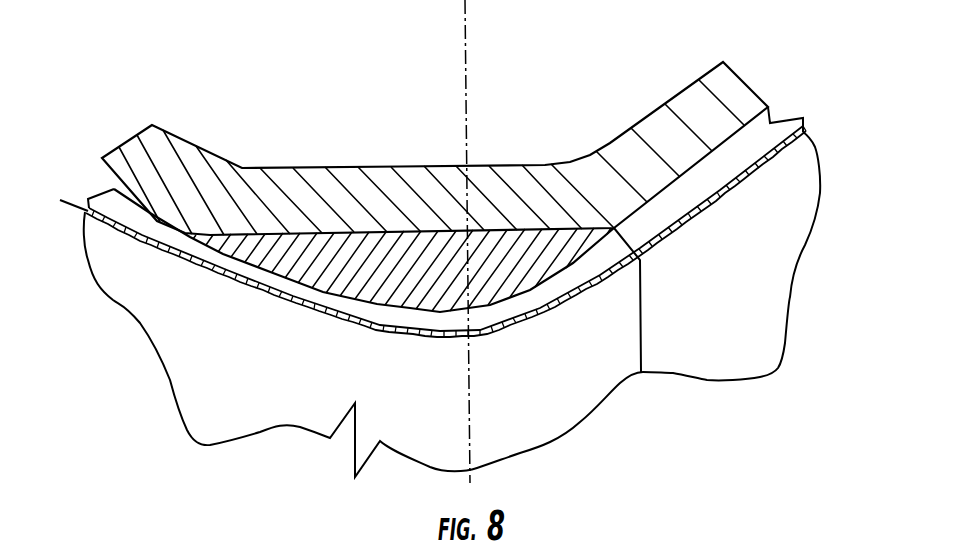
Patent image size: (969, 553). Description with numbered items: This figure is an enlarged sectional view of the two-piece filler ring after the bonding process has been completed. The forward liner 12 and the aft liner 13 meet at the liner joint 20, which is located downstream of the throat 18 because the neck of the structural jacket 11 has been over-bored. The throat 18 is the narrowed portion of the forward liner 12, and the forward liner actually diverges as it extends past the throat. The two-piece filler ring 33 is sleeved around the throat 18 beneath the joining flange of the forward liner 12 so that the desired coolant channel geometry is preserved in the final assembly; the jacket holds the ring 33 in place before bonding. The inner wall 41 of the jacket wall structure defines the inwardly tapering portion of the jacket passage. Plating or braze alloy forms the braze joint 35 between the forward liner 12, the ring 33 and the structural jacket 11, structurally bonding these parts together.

The structural jacket 11 is at (718, 102).
The inner wall 41 is at (397, 188).
The braze joint 35 is at (440, 220).
The two-piece filler ring 33 is at (367, 273).
The throat 18 is at (481, 334).
The liner joint 20 is at (650, 235).
The forward liner 12 is at (598, 368).
The aft liner 13 is at (732, 337).